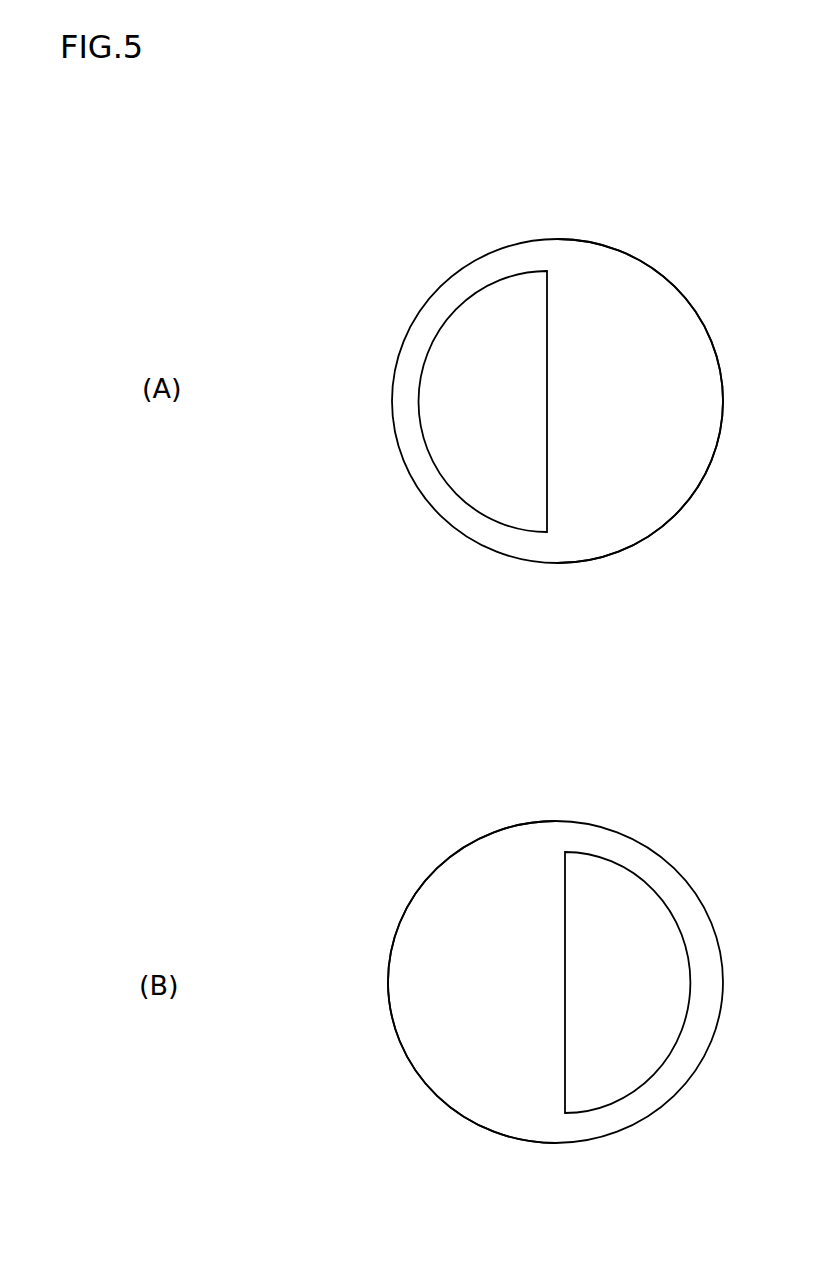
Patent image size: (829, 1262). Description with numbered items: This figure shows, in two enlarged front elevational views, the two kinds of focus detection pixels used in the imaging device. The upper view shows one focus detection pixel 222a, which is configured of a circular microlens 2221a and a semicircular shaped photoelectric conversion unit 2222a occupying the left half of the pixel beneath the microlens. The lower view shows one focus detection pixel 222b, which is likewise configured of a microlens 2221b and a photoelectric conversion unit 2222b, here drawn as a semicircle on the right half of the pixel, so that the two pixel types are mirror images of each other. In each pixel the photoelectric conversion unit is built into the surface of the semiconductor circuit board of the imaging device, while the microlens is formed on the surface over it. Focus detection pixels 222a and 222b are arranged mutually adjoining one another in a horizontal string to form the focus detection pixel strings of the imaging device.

The focus detection pixel 222a is at (412, 193).
The microlens 2221a is at (590, 295).
The photoelectric conversion unit 2222a is at (488, 312).
The focus detection pixel 222b is at (462, 775).
The microlens 2221b is at (488, 877).
The photoelectric conversion unit 2222b is at (620, 893).